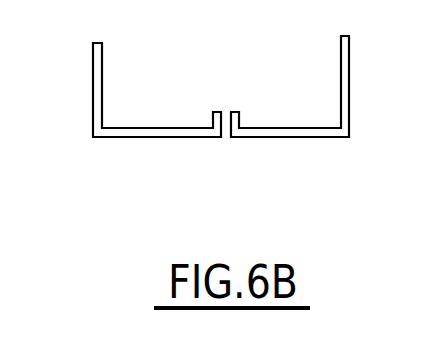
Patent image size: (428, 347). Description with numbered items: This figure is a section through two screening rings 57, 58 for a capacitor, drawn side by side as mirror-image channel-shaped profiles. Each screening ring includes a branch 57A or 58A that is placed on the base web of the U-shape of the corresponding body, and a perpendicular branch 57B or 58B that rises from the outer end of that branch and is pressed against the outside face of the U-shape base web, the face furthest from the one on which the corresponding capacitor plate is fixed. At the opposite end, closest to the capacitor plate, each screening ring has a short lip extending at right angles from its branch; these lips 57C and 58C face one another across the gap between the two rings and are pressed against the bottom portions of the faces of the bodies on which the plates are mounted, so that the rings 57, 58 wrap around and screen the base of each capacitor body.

The screening ring 57 is at (285, 137).
The branch 57A is at (325, 137).
The perpendicular branch 57B is at (349, 62).
The lip 57C is at (240, 118).
The screening ring 58 is at (164, 137).
The branch 58A is at (108, 137).
The perpendicular branch 58B is at (93, 67).
The lip 58C is at (211, 121).